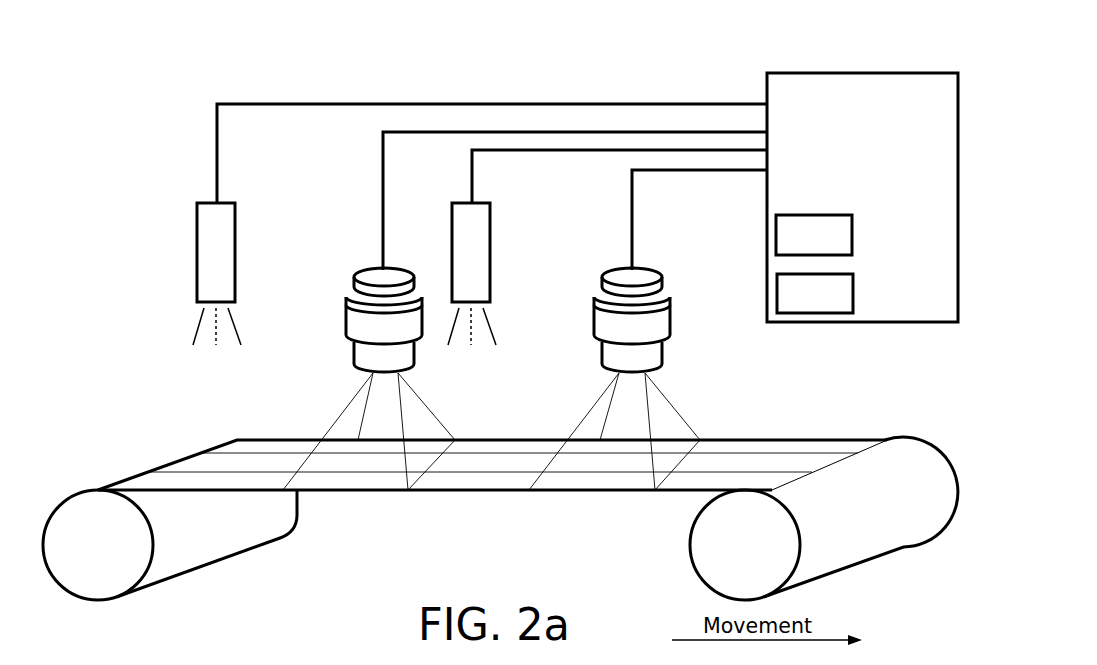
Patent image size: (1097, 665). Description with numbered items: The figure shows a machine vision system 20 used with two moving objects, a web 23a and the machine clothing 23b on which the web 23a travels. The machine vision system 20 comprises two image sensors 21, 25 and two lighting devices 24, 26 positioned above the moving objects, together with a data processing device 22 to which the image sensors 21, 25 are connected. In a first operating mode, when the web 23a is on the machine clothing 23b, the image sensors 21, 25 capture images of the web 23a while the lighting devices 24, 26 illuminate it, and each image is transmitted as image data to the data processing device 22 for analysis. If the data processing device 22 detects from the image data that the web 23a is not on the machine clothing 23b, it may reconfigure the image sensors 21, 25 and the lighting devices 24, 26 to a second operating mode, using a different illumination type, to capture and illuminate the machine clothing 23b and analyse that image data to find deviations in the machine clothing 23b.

The machine vision system 20 is at (782, 31).
The image sensor 21 is at (598, 285).
The data processing device 22 is at (768, 84).
The web 23a is at (749, 475).
The machine clothing 23b is at (860, 475).
The lighting device 24 is at (217, 274).
The image sensor 25 is at (353, 285).
The lighting device 26 is at (472, 274).